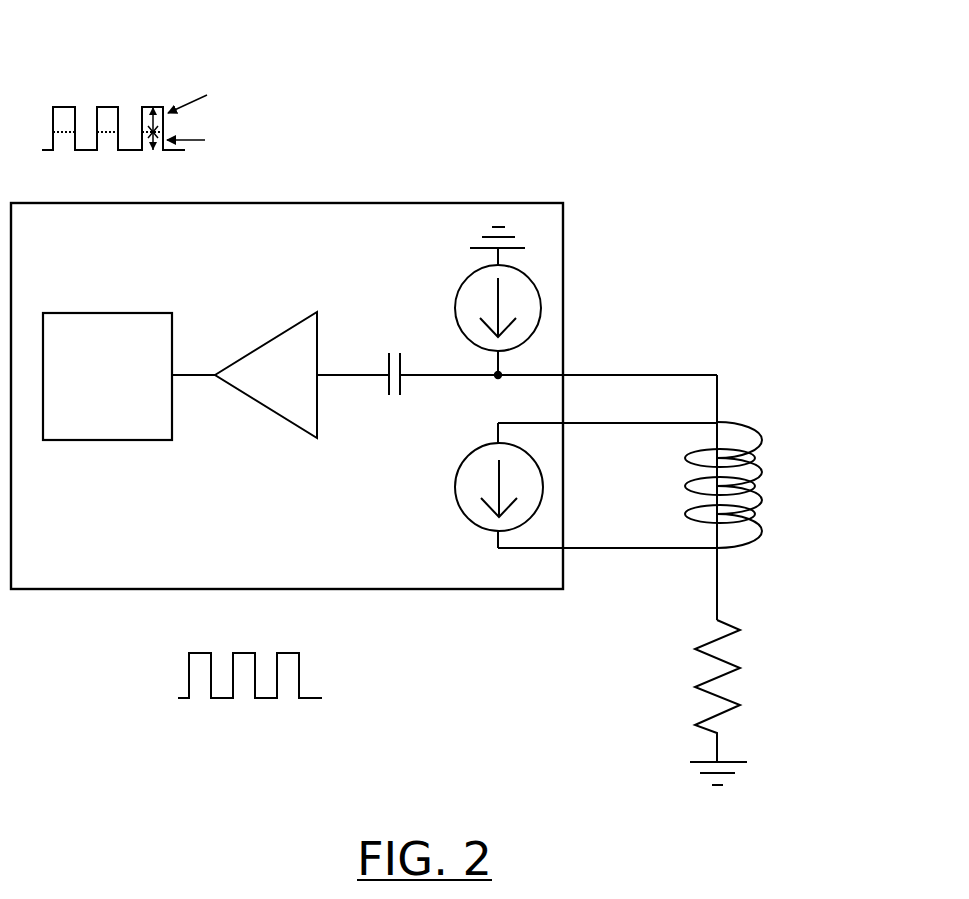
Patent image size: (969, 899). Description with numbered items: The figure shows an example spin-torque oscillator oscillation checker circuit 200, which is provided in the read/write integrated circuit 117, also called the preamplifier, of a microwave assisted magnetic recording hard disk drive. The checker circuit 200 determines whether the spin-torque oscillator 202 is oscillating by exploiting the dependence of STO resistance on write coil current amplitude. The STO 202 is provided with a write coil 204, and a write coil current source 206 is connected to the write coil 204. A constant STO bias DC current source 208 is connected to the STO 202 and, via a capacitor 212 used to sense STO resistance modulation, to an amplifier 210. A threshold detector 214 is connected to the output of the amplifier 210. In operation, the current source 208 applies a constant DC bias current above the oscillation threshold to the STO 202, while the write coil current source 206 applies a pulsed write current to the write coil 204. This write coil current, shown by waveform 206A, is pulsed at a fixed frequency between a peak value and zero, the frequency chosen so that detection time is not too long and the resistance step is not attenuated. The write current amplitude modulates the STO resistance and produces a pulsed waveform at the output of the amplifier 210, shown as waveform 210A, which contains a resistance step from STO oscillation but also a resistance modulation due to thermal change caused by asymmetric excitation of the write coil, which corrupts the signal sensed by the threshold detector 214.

The spin-torque oscillator oscillation checker circuit 200 is at (442, 31).
The read/write integrated circuit 117 is at (142, 231).
The threshold detector 214 is at (107, 376).
The amplifier 210 is at (266, 375).
The amplifier output waveform 210A is at (203, 373).
The capacitor 212 is at (392, 387).
The constant STO bias DC current source 208 is at (438, 289).
The write coil current source 206 is at (437, 505).
The write coil current waveform 206A is at (457, 505).
The write coil 204 is at (760, 485).
The spin-torque oscillator 202 is at (748, 702).